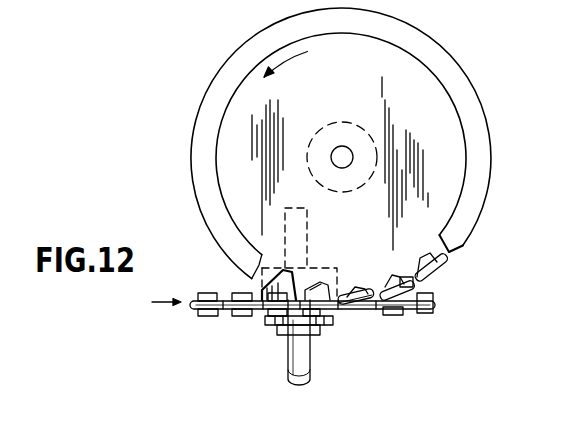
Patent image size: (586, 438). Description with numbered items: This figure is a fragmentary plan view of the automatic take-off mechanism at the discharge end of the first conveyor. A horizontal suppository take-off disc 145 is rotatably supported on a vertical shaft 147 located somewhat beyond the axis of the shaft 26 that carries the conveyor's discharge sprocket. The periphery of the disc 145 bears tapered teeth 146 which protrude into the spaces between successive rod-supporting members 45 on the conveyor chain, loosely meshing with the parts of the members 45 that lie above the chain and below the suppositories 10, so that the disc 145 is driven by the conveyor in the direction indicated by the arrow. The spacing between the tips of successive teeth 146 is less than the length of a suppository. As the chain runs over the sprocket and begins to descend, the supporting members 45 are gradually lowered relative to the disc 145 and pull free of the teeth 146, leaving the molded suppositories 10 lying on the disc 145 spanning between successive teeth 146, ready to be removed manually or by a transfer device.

The molded suppositories 10 is at (208, 312).
The shaft 26 is at (288, 360).
The rod-supporting members 45 is at (357, 315).
The suppository take-off disc 145 is at (484, 86).
The tapered teeth 146 is at (262, 268).
The vertical shaft 147 is at (350, 151).